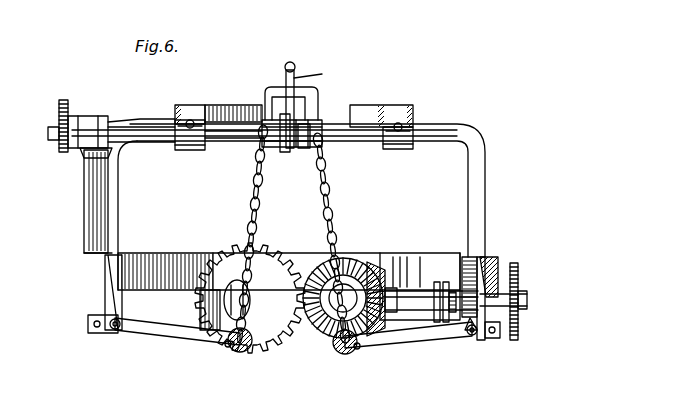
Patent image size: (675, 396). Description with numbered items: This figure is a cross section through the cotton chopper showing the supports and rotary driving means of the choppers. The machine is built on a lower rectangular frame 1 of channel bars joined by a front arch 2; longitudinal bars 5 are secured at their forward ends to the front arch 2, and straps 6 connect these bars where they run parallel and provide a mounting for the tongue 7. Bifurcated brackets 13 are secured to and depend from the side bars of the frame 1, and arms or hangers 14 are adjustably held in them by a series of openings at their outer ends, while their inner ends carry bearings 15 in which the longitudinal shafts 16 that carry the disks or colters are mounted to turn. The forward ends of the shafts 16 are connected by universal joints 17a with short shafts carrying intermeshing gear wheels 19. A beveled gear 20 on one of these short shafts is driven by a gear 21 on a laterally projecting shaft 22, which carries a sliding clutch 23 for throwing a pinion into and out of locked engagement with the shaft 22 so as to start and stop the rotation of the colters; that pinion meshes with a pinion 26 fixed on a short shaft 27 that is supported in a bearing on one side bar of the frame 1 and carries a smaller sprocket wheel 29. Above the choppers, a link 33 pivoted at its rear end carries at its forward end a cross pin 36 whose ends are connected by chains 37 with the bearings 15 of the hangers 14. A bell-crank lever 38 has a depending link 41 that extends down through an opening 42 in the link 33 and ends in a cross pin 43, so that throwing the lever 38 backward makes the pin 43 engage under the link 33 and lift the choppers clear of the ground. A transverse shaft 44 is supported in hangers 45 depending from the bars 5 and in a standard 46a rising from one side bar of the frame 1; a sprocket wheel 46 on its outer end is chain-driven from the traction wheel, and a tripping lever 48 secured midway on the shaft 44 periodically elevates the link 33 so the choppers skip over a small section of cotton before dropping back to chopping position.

The lower rectangular frame 1 is at (147, 258).
The front arch 2 is at (483, 178).
The longitudinal bars 5 is at (222, 104).
The straps 6 is at (272, 88).
The tongue 7 is at (303, 97).
The bifurcated brackets 13 is at (104, 304).
The arms or hangers 14 is at (151, 334).
The bearings 15 is at (243, 353).
The longitudinal shafts 16 is at (226, 348).
The universal joints 17a is at (226, 298).
The intermeshing gear wheels 19 is at (311, 343).
The beveled gear 20 is at (316, 281).
The gear 21 is at (381, 293).
The laterally projecting shaft 22 is at (438, 310).
The sliding clutch 23 is at (443, 280).
The pinion 26 is at (476, 263).
The short shaft 27 is at (527, 300).
The smaller sprocket wheel 29 is at (517, 340).
The link 33 is at (274, 112).
The cross pin 36 is at (317, 118).
The chains 37 is at (263, 201).
The bell-crank lever 38 is at (293, 63).
The depending link 41 is at (318, 72).
The opening 42 is at (309, 117).
The cross pin 43 is at (285, 143).
The transverse shaft 44 is at (224, 140).
The hangers 45 is at (183, 146).
The sprocket wheel 46 is at (67, 117).
The standard 46a is at (103, 126).
The tripping lever 48 is at (305, 147).